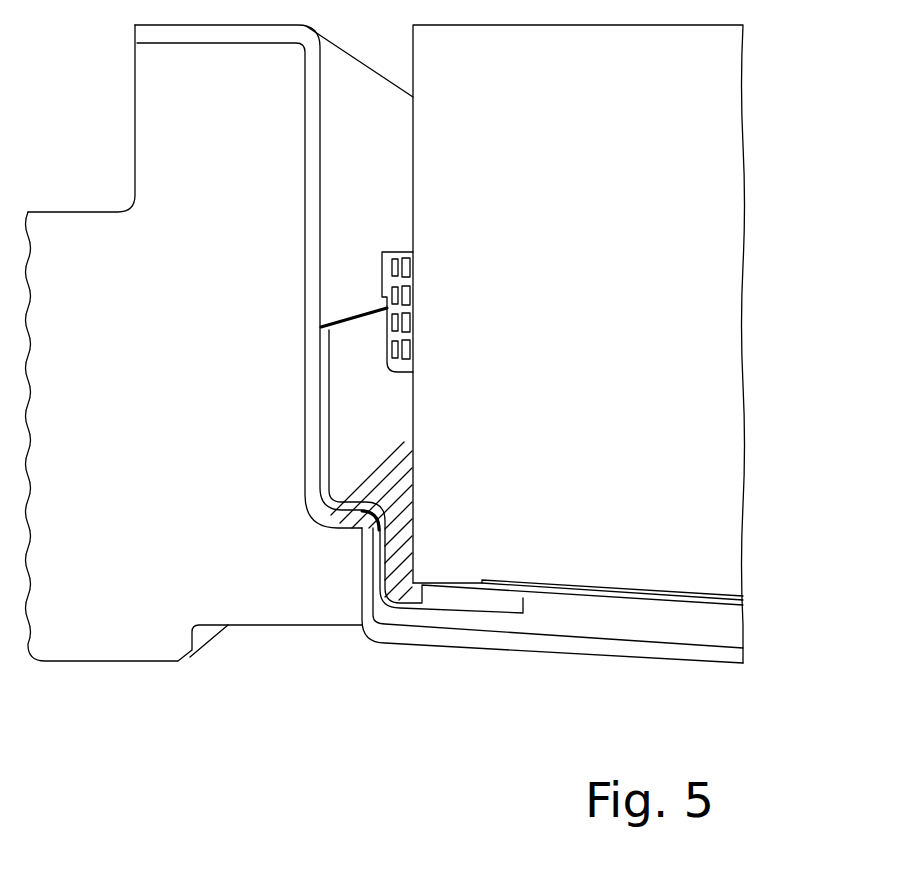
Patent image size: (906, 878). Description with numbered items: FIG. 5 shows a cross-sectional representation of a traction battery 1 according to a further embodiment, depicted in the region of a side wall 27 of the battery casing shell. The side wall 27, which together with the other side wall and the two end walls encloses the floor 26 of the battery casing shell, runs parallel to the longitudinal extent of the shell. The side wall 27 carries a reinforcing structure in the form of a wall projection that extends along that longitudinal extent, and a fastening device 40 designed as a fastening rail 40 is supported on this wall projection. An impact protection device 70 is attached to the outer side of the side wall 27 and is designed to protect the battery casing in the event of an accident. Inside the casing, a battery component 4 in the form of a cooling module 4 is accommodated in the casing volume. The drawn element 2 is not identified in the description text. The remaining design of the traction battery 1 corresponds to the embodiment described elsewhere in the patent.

The traction battery 1 is at (788, 107).
The housing 2 is at (735, 530).
The battery component 4 is at (742, 600).
The floor 26 is at (530, 648).
The side wall 27 is at (262, 597).
The fastening device 40 is at (344, 447).
The impact protection device 70 is at (140, 118).